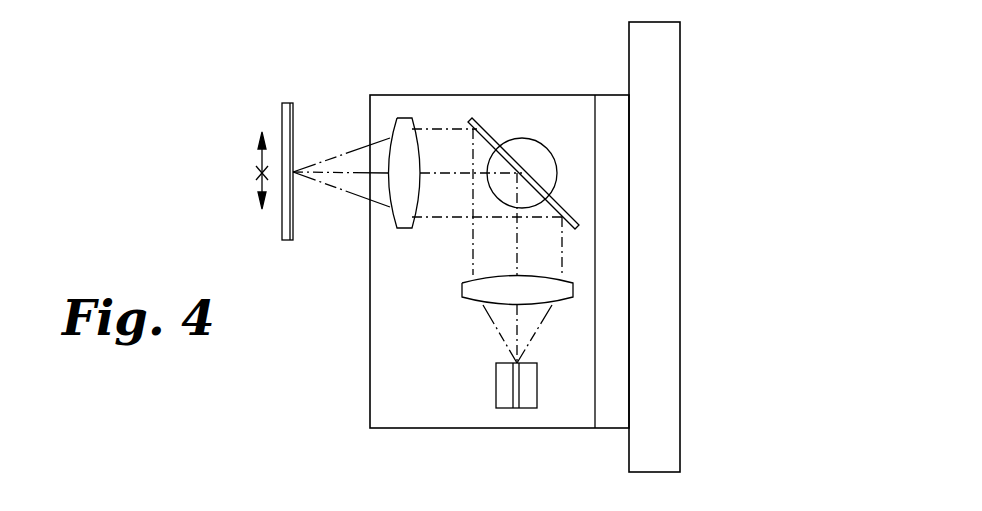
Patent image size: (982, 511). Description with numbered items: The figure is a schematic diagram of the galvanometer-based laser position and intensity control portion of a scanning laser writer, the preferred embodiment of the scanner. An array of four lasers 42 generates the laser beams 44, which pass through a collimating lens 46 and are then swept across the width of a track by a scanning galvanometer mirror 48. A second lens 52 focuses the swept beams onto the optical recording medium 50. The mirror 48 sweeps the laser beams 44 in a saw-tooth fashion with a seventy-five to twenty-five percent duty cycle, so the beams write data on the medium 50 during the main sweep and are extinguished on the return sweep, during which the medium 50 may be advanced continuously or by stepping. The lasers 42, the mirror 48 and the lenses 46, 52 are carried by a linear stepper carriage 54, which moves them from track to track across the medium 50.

The array of four lasers 42 is at (496, 383).
The laser beams 44 is at (493, 325).
The collimating lens 46 is at (462, 290).
The scanning galvanometer mirror 48 is at (484, 128).
The optical recording medium 50 is at (282, 117).
The second lens 52 is at (404, 118).
The linear stepper carriage 54 is at (680, 272).